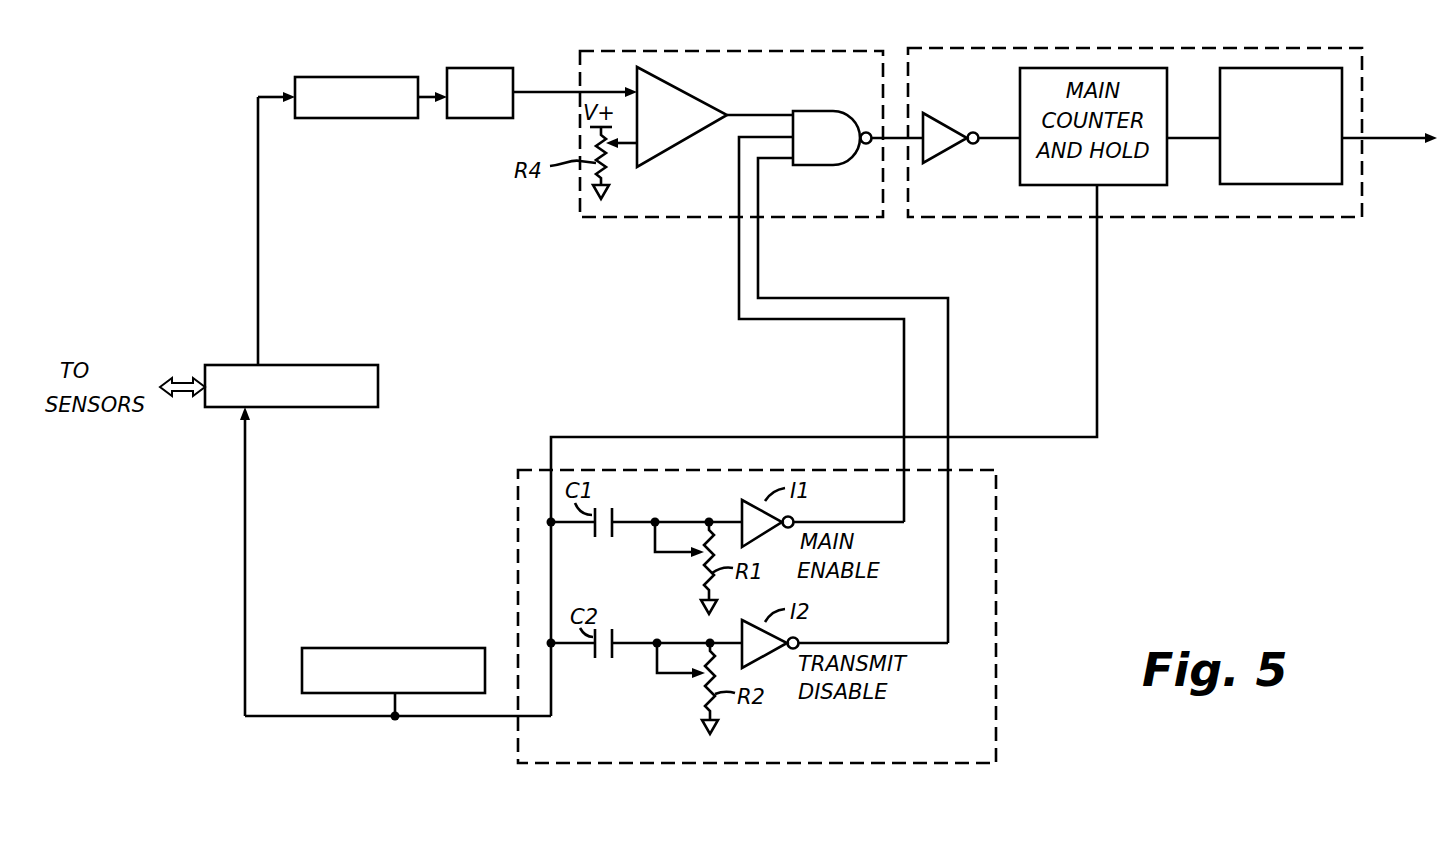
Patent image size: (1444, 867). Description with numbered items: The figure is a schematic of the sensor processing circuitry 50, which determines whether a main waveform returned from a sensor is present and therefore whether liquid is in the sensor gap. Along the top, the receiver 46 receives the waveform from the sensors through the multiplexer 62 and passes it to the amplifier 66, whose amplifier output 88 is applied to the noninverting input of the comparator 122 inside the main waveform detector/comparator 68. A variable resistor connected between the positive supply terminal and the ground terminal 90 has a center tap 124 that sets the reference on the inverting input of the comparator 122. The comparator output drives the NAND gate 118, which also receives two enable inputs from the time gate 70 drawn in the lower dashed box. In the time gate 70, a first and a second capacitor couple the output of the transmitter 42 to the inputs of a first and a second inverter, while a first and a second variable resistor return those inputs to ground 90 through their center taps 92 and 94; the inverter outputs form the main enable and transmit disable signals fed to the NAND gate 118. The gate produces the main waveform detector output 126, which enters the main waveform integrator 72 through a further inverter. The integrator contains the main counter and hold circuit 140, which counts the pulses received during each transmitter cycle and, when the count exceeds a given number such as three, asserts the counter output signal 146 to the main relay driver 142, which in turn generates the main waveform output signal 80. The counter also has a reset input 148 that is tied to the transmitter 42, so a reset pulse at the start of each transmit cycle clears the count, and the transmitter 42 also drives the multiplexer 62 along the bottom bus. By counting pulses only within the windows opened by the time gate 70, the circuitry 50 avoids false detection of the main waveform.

The transmitter 42 is at (355, 648).
The receiver 46 is at (318, 118).
The sensor processing circuitry 50 is at (1193, 399).
The multiplexer 62 is at (305, 365).
The amplifier 66 is at (468, 118).
The main waveform detector/comparator 68 is at (706, 50).
The time gate 70 is at (518, 752).
The main waveform integrator 72 is at (1028, 217).
The main waveform output signal 80 is at (1393, 140).
The amplifier output 88 is at (548, 91).
The ground terminal 90 is at (700, 607).
The center tap of variable resistor R1 92 is at (665, 553).
The center tap of variable resistor R2 94 is at (668, 676).
The NAND gate 118 is at (820, 110).
The comparator 122 is at (690, 133).
The center tap of resistor R4 124 is at (620, 148).
The main waveform detector output 126 is at (893, 148).
The main counter and hold circuit 140 is at (971, 112).
The main relay driver 142 is at (1342, 81).
The counter output signal 146 is at (1188, 142).
The reset input 148 is at (1095, 199).